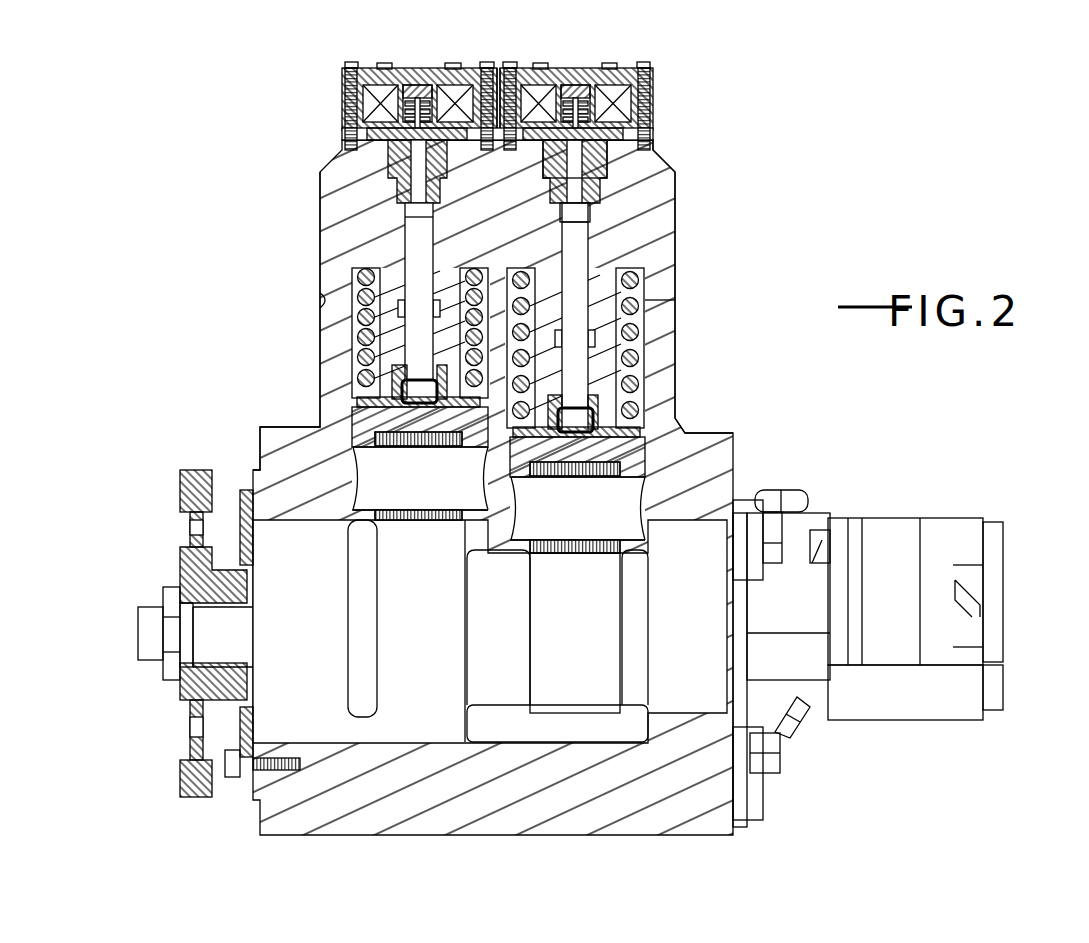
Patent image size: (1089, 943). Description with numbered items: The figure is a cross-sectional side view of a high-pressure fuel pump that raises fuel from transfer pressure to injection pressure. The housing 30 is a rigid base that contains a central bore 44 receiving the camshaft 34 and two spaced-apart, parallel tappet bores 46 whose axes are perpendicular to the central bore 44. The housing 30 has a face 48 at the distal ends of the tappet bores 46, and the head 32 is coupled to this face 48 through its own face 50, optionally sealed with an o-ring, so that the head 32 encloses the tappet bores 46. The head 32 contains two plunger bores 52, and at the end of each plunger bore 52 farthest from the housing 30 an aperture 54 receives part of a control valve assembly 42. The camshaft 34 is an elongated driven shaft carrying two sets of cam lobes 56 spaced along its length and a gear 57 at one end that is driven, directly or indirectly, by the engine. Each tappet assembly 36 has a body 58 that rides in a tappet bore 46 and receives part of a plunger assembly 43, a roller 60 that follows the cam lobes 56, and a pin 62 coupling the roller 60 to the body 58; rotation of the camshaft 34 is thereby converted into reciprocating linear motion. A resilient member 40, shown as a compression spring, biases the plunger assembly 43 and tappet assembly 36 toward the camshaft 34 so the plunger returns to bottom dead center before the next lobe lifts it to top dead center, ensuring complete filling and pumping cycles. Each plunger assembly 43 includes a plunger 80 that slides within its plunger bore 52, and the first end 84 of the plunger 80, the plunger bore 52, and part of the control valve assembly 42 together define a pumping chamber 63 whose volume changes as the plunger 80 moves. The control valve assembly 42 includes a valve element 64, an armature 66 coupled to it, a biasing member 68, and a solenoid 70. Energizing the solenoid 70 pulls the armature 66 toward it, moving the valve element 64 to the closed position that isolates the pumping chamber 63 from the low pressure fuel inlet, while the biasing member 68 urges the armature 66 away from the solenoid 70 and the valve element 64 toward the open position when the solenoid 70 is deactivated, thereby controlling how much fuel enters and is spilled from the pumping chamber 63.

The housing 30 is at (720, 848).
The head 32 is at (677, 260).
The camshaft 34 is at (500, 707).
The tappet assembly 36 is at (350, 462).
The resilient member 40 is at (637, 332).
The control valve assembly 42 is at (600, 190).
The plunger assembly 43 is at (386, 360).
The central bore 44 is at (367, 738).
The tappet bore 46 is at (360, 420).
The face 48 is at (657, 300).
The face 50 is at (318, 300).
The plunger bore 52 is at (320, 195).
The aperture 54 is at (370, 112).
The cam lobes 56 is at (467, 730).
The gear 57 is at (193, 797).
The body 58 is at (735, 433).
The roller 60 is at (567, 553).
The pin 62 is at (673, 520).
The pumping chamber 63 is at (350, 180).
The valve element 64 is at (578, 220).
The armature 66 is at (612, 112).
The biasing member 68 is at (588, 68).
The solenoid 70 is at (525, 70).
The plunger 80 is at (345, 243).
The first end 84 is at (578, 237).